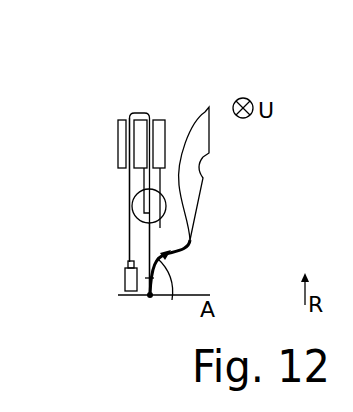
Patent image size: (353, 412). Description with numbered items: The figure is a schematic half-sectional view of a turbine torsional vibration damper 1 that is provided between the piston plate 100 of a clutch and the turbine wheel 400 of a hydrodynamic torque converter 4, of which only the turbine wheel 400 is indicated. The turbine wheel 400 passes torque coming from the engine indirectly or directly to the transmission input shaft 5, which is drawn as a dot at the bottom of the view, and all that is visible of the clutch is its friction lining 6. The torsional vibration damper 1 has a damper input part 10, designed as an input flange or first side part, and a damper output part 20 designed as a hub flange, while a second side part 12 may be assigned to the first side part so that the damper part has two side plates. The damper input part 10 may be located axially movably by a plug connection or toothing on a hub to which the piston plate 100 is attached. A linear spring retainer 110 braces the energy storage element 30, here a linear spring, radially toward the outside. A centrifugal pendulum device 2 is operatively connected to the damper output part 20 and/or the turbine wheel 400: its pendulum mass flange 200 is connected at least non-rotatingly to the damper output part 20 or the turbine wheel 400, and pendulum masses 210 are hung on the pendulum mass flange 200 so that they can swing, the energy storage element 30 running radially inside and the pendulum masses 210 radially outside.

The torsional vibration damper 1 is at (172, 300).
The centrifugal pendulum device 2 is at (171, 118).
The hydrodynamic torque converter 4 is at (230, 174).
The transmission input shaft 5 is at (150, 297).
The friction lining 6 is at (118, 148).
The damper input part 10 is at (143, 193).
The second side part 12 is at (166, 198).
The damper output part 20 is at (143, 206).
The energy storage element 30 is at (167, 210).
The piston plate 100 is at (128, 172).
The retainer 110 is at (143, 180).
The pendulum mass flange 200 is at (148, 118).
The pendulum masses 210 is at (160, 134).
The turbine wheel 400 is at (205, 110).